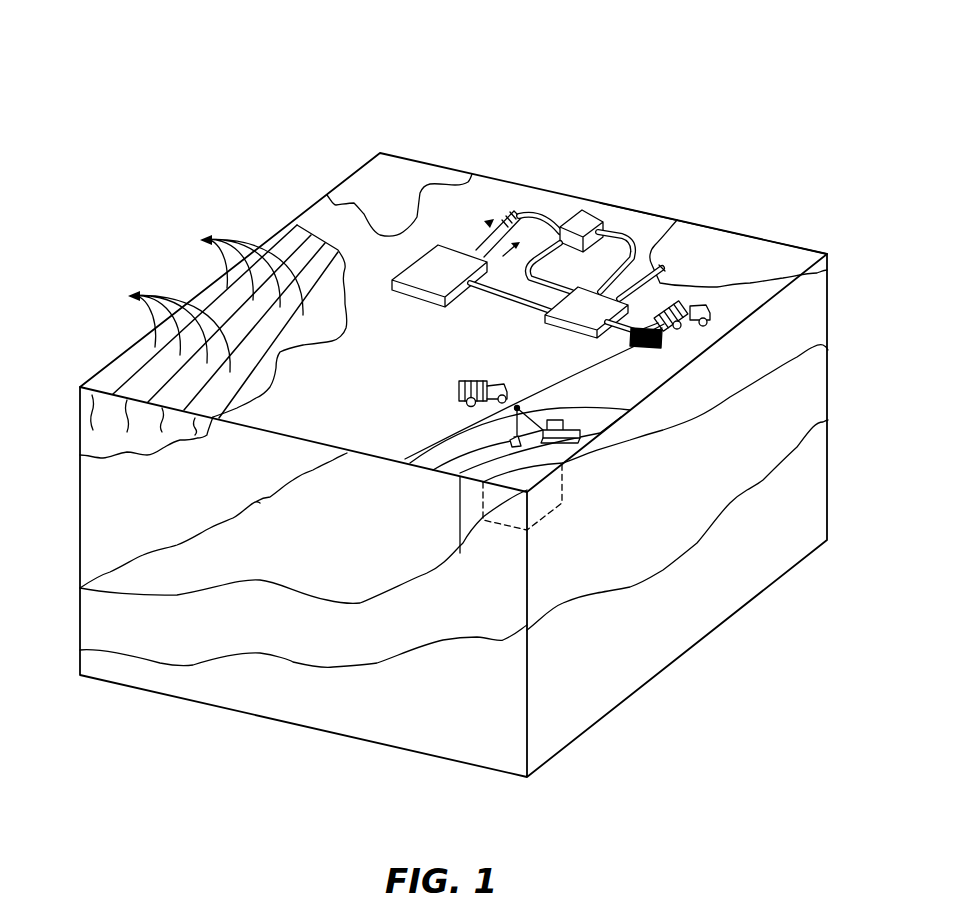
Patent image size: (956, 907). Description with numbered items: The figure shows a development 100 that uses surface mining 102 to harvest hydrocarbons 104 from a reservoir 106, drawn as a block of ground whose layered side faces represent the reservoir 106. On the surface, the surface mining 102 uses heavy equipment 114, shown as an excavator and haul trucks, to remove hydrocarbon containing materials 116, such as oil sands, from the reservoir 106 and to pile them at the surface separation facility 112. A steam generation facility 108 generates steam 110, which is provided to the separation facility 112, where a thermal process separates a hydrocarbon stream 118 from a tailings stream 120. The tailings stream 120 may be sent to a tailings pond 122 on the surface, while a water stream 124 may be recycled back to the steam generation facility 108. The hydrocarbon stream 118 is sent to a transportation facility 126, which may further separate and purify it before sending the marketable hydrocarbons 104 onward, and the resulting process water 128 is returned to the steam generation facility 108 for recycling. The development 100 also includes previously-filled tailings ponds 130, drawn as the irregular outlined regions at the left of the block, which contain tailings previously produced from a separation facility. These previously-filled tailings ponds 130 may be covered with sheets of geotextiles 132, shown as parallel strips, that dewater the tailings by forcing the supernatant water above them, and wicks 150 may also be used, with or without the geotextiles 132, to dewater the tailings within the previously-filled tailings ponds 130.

The development 100 is at (453, 35).
The surface mining 102 is at (581, 400).
The hydrocarbons 104 is at (490, 224).
The reservoir 106 is at (92, 615).
The steam generation facility 108 is at (593, 208).
The steam 110 is at (562, 283).
The surface separation facility 112 is at (603, 309).
The heavy equipment 114 is at (703, 305).
The hydrocarbon containing materials 116 is at (653, 347).
The hydrocarbon stream 118 is at (503, 301).
The tailings stream 120 is at (673, 256).
The tailings pond 122 is at (710, 238).
The water stream 124 is at (614, 276).
The transportation facility 126 is at (456, 277).
The process water 128 is at (500, 246).
The previously-filled tailings ponds 130 is at (398, 172).
The sheets of geotextiles 132 is at (233, 272).
The wicks 150 is at (160, 328).